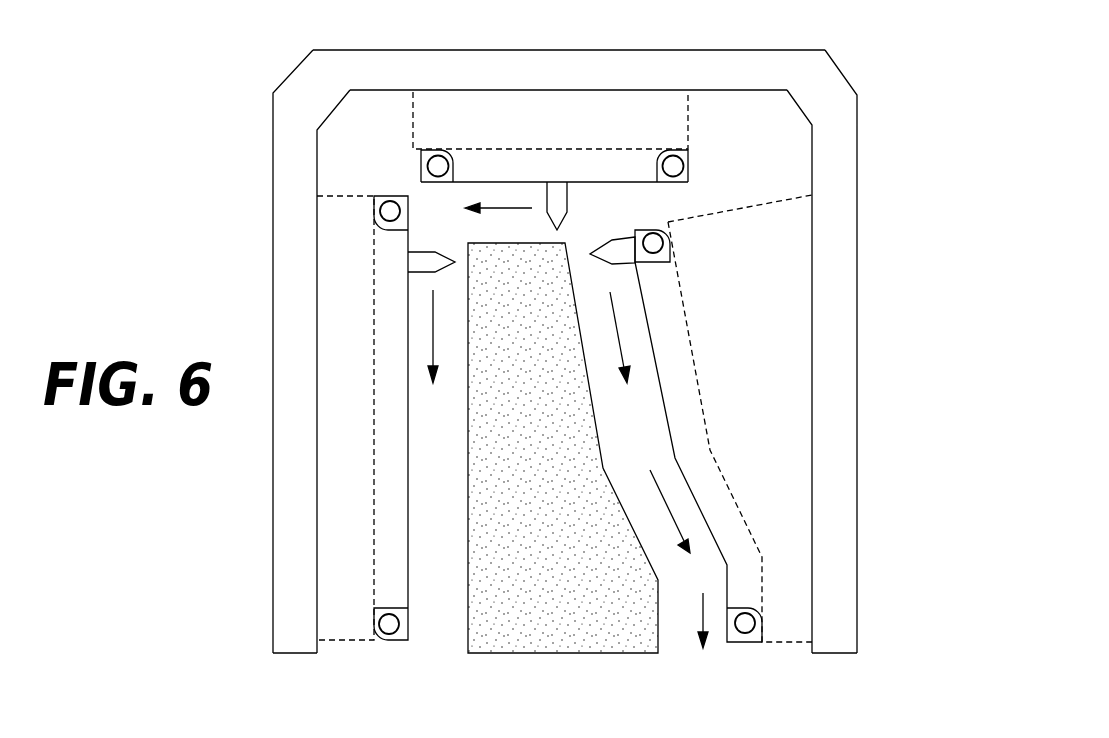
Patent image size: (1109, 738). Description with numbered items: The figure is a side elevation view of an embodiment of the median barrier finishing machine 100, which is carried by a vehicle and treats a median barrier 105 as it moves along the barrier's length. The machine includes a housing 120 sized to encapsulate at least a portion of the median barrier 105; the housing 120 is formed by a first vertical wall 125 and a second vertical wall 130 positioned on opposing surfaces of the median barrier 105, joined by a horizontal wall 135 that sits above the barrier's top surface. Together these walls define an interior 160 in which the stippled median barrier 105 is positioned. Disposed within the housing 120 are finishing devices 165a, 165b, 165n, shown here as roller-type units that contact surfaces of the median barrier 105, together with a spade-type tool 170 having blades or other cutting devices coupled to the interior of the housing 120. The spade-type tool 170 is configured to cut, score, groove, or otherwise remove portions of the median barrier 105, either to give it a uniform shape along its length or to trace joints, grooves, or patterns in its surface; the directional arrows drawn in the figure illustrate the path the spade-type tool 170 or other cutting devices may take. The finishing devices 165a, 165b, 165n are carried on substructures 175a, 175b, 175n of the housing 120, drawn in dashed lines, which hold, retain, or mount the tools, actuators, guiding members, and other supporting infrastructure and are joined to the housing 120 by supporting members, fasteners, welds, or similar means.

The median barrier finishing machine 100 is at (890, 603).
The median barrier 105 is at (556, 459).
The housing 120 is at (850, 152).
The first vertical wall 125 is at (273, 288).
The second vertical wall 130 is at (857, 289).
The horizontal wall 135 is at (694, 50).
The interior 160 is at (768, 159).
The finishing device 165a is at (375, 318).
The finishing device 165b is at (405, 170).
The finishing device 165n is at (685, 305).
The spade-type tool 170 is at (456, 262).
The substructure 175a is at (423, 418).
The substructure 175b is at (590, 129).
The substructure 175n is at (782, 347).